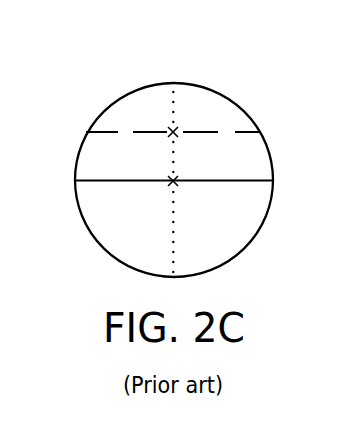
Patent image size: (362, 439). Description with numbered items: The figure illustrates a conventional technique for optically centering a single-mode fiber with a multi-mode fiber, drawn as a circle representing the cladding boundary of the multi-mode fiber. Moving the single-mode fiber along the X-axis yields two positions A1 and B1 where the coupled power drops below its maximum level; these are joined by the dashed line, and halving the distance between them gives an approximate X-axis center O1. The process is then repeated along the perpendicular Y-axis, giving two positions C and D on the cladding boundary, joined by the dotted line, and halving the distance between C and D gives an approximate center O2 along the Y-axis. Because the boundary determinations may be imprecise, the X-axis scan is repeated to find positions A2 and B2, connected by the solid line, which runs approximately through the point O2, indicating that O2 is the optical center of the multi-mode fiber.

The position A1 is at (115, 125).
The position B1 is at (238, 131).
The position A2 is at (113, 138).
The position B2 is at (237, 224).
The approximate center O1 is at (186, 122).
The optical center O2 is at (186, 171).
The position C is at (220, 120).
The position D is at (129, 241).